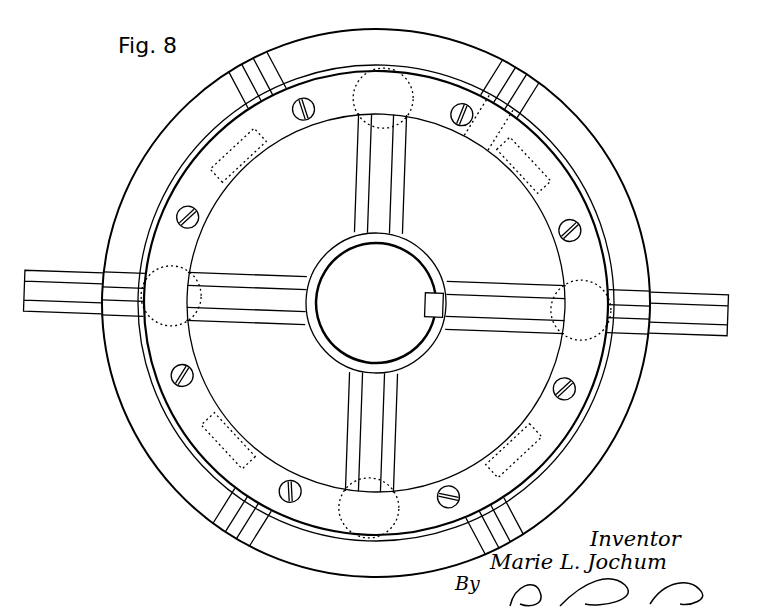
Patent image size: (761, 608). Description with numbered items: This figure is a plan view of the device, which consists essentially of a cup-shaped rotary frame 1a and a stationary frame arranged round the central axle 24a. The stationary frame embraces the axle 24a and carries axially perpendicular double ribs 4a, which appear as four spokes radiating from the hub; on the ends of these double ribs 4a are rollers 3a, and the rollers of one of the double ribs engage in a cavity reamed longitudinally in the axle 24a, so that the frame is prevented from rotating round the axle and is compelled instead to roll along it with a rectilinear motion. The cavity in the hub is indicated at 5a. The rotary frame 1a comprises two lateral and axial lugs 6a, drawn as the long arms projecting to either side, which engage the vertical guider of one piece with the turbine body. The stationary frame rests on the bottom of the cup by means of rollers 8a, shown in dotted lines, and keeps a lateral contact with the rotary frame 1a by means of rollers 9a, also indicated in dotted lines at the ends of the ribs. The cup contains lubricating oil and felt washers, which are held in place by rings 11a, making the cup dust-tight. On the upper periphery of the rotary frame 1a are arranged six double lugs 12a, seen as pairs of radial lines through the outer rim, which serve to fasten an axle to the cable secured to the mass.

The rotary frame 1a is at (376, 303).
The roller 3a is at (403, 497).
The double rib 4a is at (400, 183).
The notch 5a is at (432, 308).
The lateral lug 6a is at (67, 277).
The roller 8a is at (230, 177).
The roller 9a is at (367, 123).
The ring 11a is at (177, 355).
The double lug 12a is at (255, 41).
The axle 24a is at (376, 303).